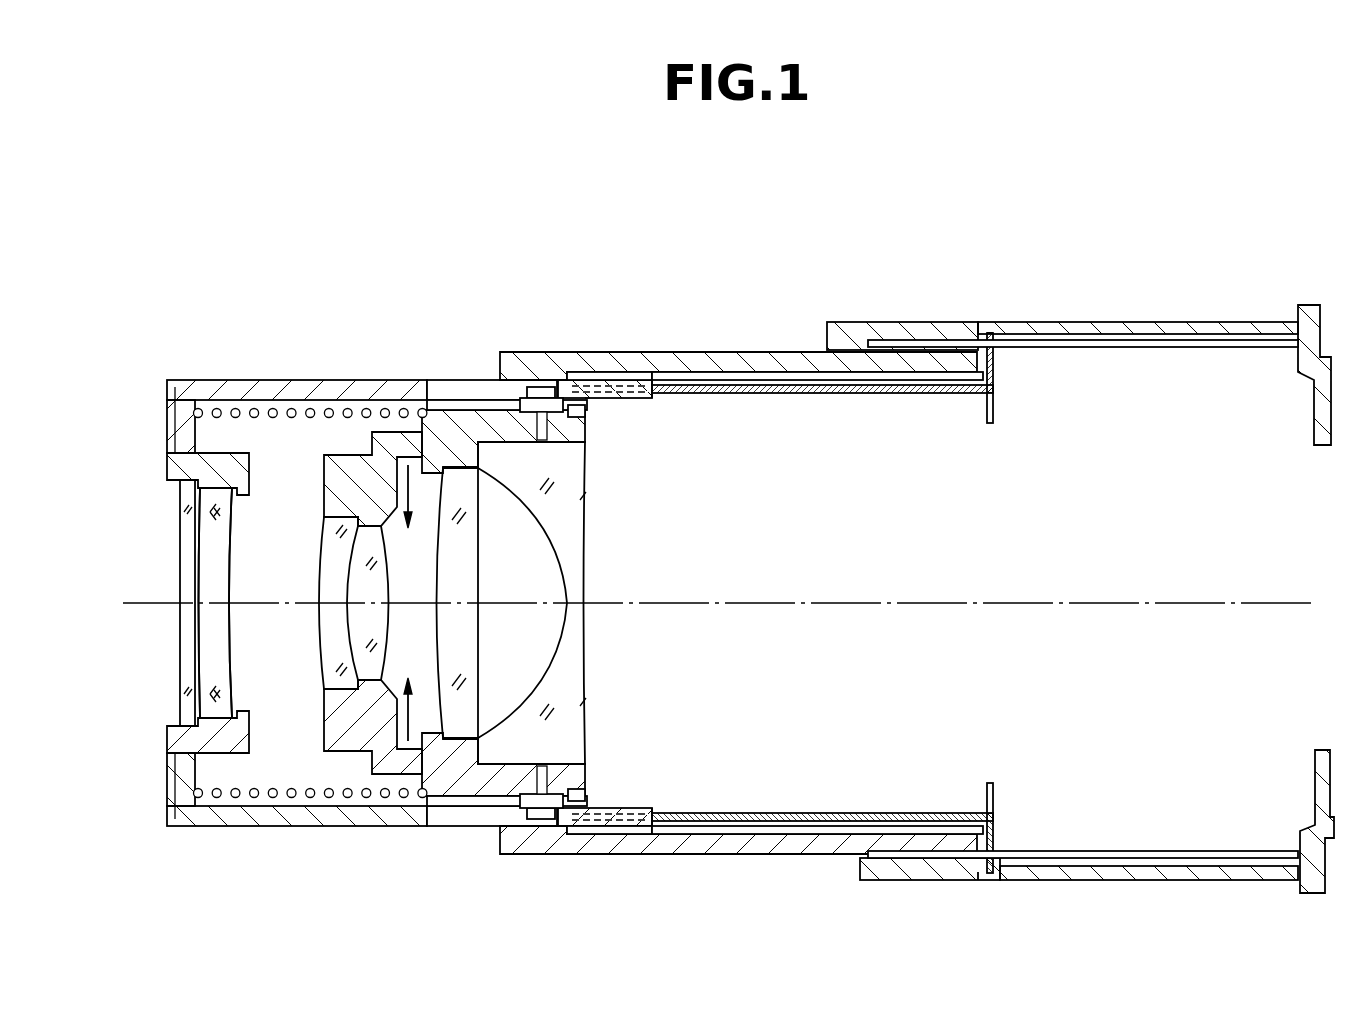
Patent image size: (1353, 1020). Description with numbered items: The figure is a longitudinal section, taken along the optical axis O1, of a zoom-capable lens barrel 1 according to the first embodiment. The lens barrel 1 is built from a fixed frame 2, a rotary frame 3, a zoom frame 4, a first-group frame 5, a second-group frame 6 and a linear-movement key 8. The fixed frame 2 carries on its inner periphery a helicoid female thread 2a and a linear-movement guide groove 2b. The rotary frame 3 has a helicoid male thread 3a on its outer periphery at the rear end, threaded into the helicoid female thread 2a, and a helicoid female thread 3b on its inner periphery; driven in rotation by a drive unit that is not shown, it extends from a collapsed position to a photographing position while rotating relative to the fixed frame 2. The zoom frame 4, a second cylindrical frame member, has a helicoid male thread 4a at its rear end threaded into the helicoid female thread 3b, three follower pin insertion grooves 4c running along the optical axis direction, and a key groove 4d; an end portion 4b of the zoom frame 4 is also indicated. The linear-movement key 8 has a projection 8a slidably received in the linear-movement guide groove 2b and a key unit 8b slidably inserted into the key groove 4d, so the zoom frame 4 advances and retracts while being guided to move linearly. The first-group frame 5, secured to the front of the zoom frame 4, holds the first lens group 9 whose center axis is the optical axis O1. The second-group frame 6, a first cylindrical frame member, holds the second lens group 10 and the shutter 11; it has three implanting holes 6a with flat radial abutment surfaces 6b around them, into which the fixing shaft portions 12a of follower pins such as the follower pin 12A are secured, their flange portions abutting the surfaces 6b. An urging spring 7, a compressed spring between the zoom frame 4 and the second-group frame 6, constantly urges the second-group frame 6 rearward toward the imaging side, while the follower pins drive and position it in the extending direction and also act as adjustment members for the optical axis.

The lens barrel 1 is at (953, 266).
The fixed frame 2 is at (1200, 322).
The helicoid female thread 2a is at (1030, 340).
The linear-movement guide groove 2b is at (1113, 339).
The rotary frame 3 is at (763, 351).
The helicoid male thread 3a is at (885, 322).
The helicoid female thread 3b is at (713, 356).
The zoom frame 4 is at (300, 390).
The helicoid male thread 4a is at (600, 372).
The lens frame end 4b is at (587, 401).
The follower pin insertion grooves 4c is at (465, 388).
The key groove 4d is at (557, 812).
The first-group frame 5 is at (210, 462).
The second-group frame 6 is at (367, 468).
The implanting holes 6a is at (567, 441).
The flat radial abutment surfaces 6b is at (588, 409).
The urging spring 7 is at (236, 409).
The linear-movement key 8 is at (993, 372).
The projection 8a is at (992, 336).
The key unit 8b is at (953, 394).
The first lens group 9 is at (210, 645).
The second lens group 10 is at (577, 630).
The shutter 11 is at (410, 717).
The follower pin 12A is at (543, 392).
The fixing shaft portions 12a is at (640, 603).
The optical axis O1 is at (145, 601).